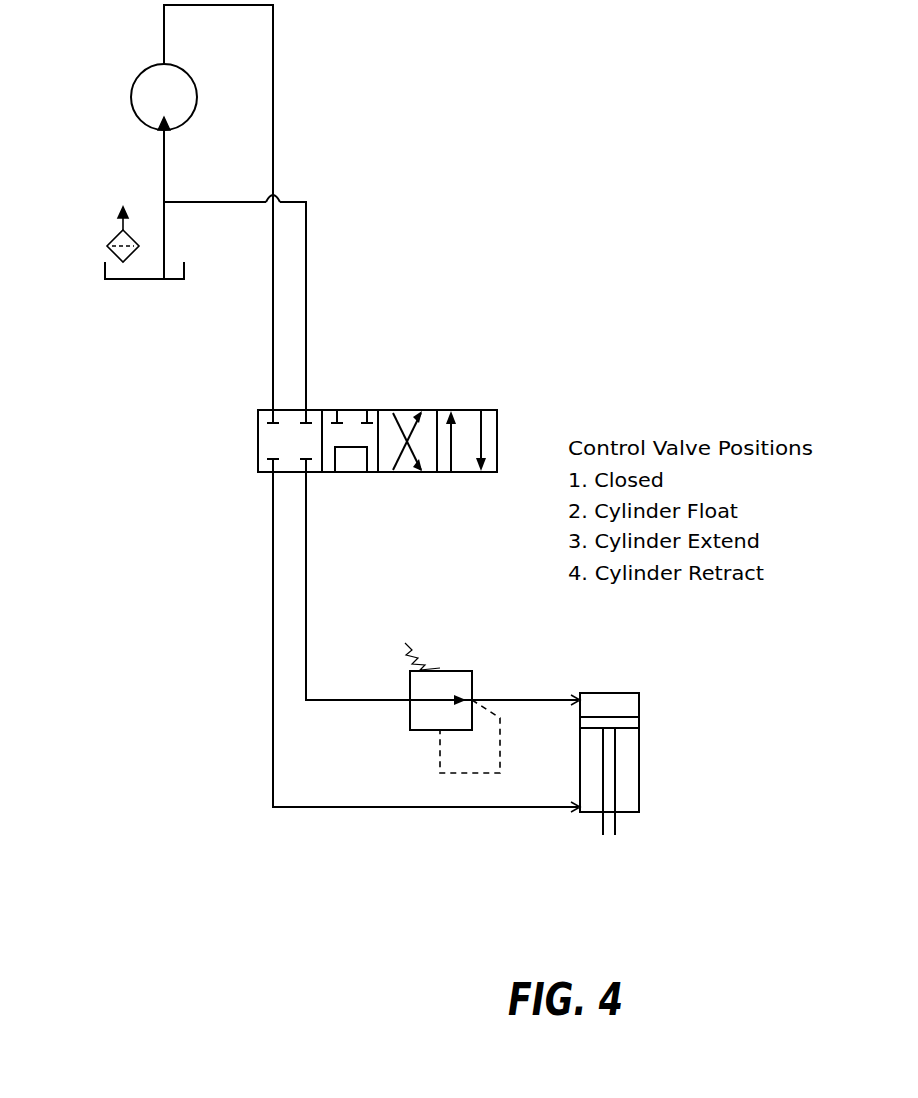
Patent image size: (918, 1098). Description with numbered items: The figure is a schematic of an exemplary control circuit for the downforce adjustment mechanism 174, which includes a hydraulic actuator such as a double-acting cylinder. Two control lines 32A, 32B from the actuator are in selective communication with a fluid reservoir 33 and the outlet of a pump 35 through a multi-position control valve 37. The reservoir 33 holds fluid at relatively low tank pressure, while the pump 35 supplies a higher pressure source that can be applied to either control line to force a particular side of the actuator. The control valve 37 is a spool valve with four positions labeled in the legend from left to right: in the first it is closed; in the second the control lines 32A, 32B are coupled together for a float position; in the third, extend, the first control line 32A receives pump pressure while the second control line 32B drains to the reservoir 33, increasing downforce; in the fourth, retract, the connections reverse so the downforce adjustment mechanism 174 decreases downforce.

The pump 35 is at (112, 79).
The fluid reservoir 33 is at (74, 289).
The multi-position control valve 37 is at (399, 400).
The first control line 32A is at (443, 661).
The second control line 32B is at (426, 840).
The downforce adjustment mechanism 174 is at (668, 752).